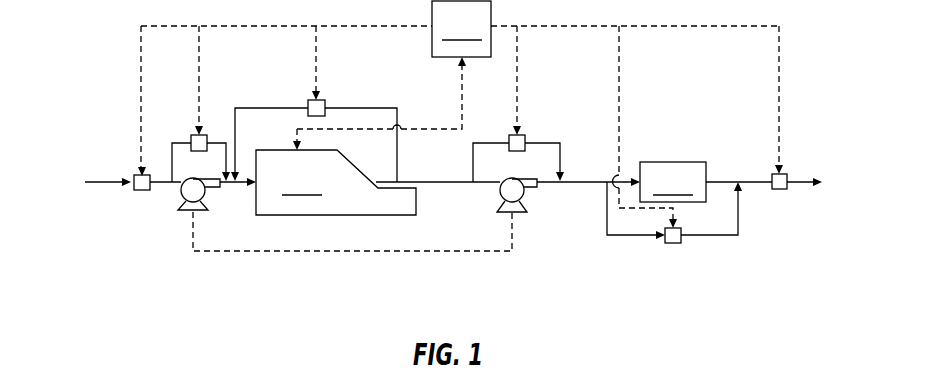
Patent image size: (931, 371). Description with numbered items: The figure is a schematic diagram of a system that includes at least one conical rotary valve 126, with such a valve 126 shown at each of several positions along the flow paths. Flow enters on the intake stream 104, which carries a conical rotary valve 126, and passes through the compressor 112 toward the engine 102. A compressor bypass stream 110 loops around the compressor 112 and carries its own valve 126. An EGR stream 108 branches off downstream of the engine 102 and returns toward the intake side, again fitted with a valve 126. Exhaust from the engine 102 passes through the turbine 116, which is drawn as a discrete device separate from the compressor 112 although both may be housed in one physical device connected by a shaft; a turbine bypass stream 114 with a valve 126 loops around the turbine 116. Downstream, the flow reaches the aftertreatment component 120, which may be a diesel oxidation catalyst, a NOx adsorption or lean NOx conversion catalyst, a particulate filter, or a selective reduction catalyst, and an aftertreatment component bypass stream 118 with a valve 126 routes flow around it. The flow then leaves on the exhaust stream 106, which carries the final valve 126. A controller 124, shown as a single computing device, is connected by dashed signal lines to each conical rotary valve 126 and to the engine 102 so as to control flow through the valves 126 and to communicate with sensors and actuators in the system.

The engine 102 is at (336, 182).
The intake stream 104 is at (103, 181).
The exhaust stream 106 is at (798, 189).
The EGR stream 108 is at (357, 107).
The compressor bypass stream 110 is at (218, 140).
The compressor 112 is at (188, 216).
The turbine bypass stream 114 is at (542, 140).
The turbine 116 is at (518, 216).
The aftertreatment component bypass stream 118 is at (632, 238).
The aftertreatment component 120 is at (673, 182).
The controller 124 is at (461, 29).
The conical rotary valve 126 is at (142, 192).